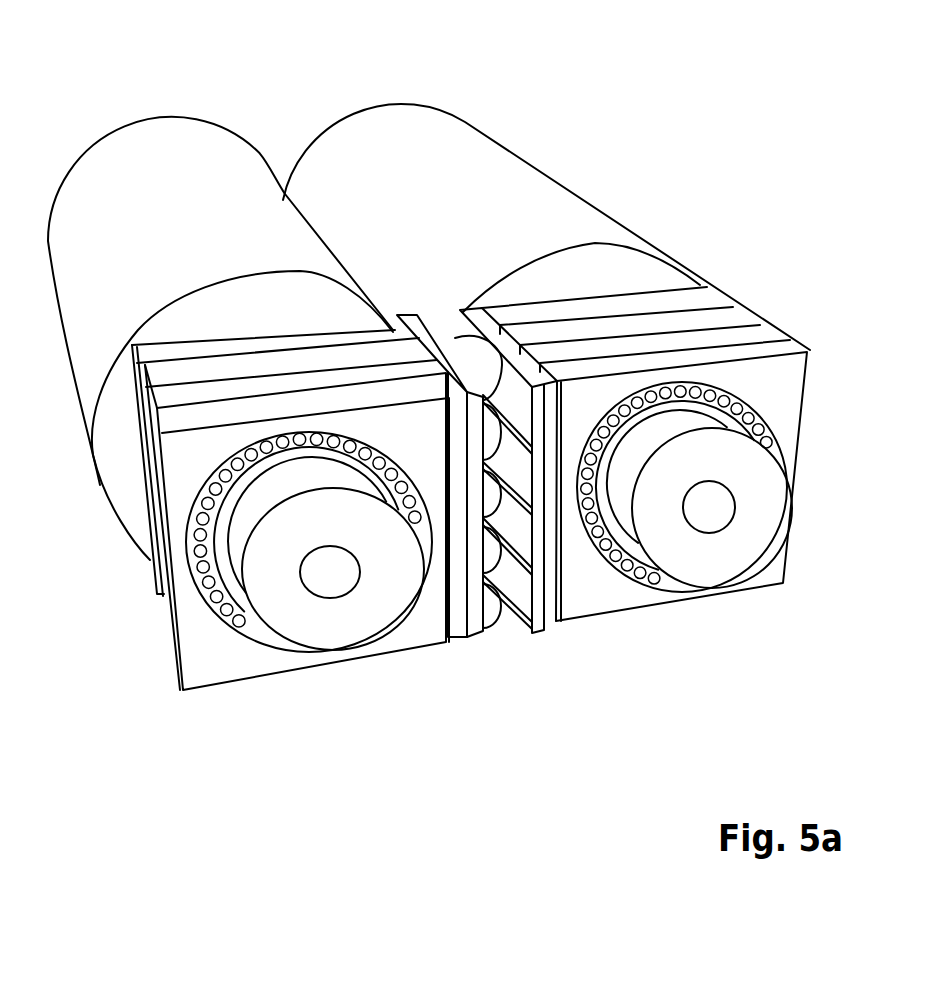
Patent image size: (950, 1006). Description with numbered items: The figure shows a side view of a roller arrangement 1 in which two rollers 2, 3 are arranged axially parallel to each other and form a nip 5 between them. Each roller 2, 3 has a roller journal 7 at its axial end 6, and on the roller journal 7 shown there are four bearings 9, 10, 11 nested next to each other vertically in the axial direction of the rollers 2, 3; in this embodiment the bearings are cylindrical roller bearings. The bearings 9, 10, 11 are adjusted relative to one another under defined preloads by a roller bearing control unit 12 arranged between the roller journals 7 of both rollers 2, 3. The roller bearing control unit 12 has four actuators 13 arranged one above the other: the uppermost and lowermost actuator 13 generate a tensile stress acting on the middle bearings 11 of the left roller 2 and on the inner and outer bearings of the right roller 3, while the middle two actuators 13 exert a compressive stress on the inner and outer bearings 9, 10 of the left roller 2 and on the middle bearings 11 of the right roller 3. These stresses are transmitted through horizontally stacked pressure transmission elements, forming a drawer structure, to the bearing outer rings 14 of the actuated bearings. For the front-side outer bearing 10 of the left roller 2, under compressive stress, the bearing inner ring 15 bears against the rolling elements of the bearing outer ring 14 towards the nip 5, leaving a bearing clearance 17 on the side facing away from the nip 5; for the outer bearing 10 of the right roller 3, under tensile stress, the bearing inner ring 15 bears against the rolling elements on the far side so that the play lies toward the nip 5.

The roller arrangement 1 is at (709, 61).
The roller 2 is at (100, 170).
The roller 3 is at (520, 183).
The nip 5 is at (274, 158).
The axial end 6 is at (332, 625).
The roller journal 7 is at (366, 620).
The bearing 9 is at (150, 478).
The outer bearing 10 is at (177, 620).
The middle bearing 11 is at (97, 393).
The roller bearing control unit 12 is at (496, 620).
The actuator 13 is at (465, 358).
The bearing outer ring 14 is at (260, 640).
The bearing inner ring 15 is at (215, 623).
The bearing clearance 17 is at (163, 567).